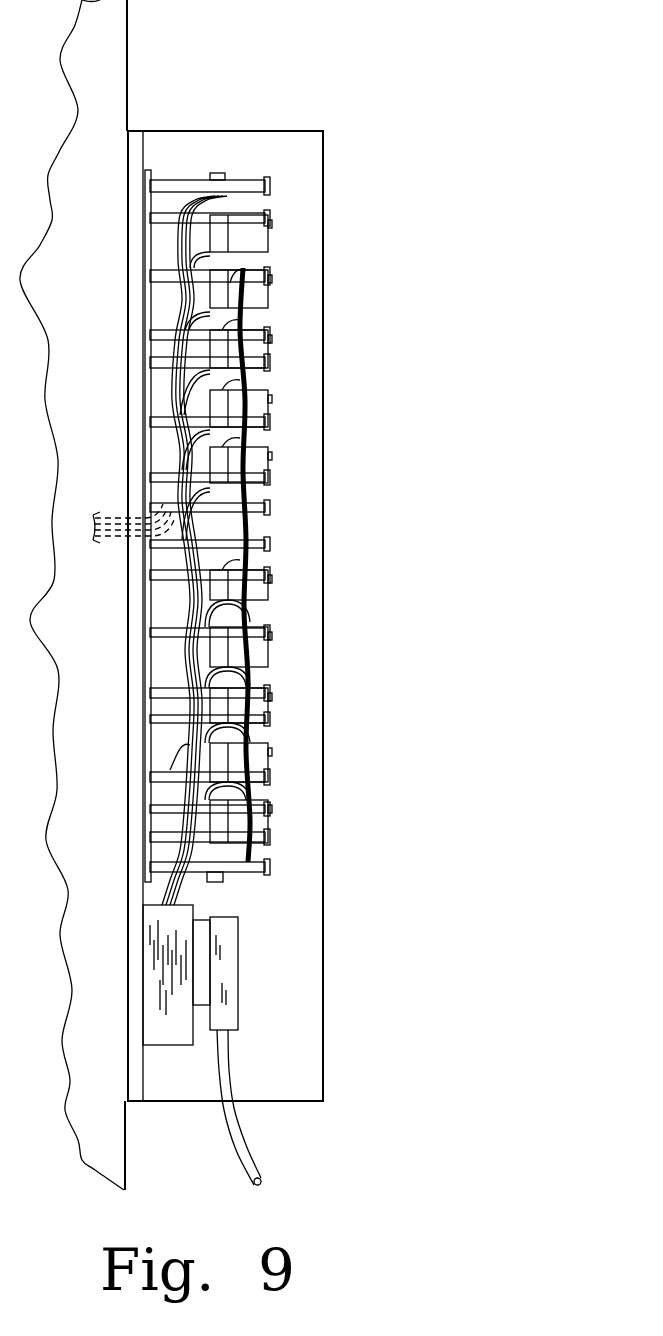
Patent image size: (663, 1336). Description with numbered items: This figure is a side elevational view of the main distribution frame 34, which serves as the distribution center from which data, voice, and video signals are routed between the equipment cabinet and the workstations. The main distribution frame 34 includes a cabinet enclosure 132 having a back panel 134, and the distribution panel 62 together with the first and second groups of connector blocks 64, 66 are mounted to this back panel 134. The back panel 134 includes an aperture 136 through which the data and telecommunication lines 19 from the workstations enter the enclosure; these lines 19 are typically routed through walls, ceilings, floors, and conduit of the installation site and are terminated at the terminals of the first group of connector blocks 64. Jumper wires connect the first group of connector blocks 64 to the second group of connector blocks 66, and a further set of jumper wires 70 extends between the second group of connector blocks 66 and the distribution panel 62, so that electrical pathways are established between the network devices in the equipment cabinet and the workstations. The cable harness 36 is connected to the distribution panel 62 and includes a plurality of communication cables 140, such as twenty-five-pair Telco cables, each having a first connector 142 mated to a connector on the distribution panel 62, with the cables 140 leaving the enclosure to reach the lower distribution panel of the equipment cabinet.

The main distribution frame 34 is at (447, 129).
The cabinet enclosure 132 is at (323, 476).
The back panel 134 is at (138, 133).
The first group of connector blocks 64 is at (300, 349).
The second group of connector blocks 66 is at (287, 706).
The data and telecommunication lines 19 is at (176, 300).
The aperture 136 is at (138, 511).
The second cross-connect or jumper wires 70 is at (190, 747).
The distribution panel 62 is at (172, 1045).
The first connector 142 is at (231, 970).
The communication cables 140 is at (226, 1082).
The cable harness 36 is at (278, 1173).